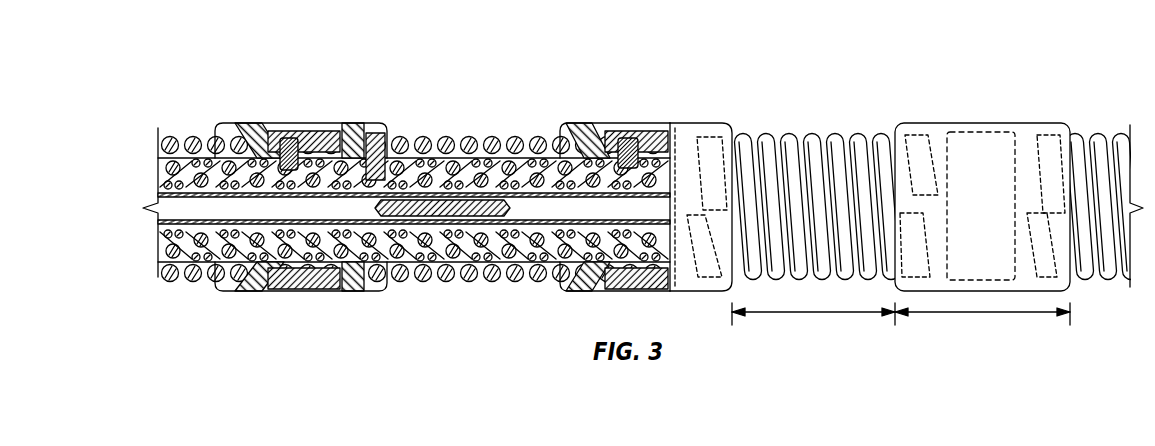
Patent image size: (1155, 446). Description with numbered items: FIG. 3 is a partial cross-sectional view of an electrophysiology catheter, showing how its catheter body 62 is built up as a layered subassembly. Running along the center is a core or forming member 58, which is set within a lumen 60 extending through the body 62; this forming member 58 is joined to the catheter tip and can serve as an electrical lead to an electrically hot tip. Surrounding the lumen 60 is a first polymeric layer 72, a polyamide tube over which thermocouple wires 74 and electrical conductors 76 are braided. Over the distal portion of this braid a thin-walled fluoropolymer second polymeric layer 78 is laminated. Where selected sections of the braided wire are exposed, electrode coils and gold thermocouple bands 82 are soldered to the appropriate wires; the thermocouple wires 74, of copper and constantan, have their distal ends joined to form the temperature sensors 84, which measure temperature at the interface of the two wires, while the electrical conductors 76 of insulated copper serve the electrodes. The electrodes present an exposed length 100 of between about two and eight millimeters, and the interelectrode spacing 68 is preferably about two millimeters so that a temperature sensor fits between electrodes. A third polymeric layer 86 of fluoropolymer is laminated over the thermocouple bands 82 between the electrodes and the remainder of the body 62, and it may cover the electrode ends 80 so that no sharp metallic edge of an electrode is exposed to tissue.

The catheter body 62 is at (158, 168).
The core member 58 is at (518, 224).
The lumen 60 is at (483, 263).
The first polymeric layer 72 is at (536, 157).
The thermocouple wires 74 is at (369, 281).
The electrical conductors 76 is at (163, 281).
The second polymeric layer 78 is at (485, 137).
The electrode ends 80 is at (243, 127).
The thermocouple bands 82 is at (650, 127).
The temperature sensors 84 is at (297, 132).
The third polymeric layer 86 is at (716, 124).
The exposed length 100 is at (803, 313).
The interelectrode spacing 68 is at (985, 313).